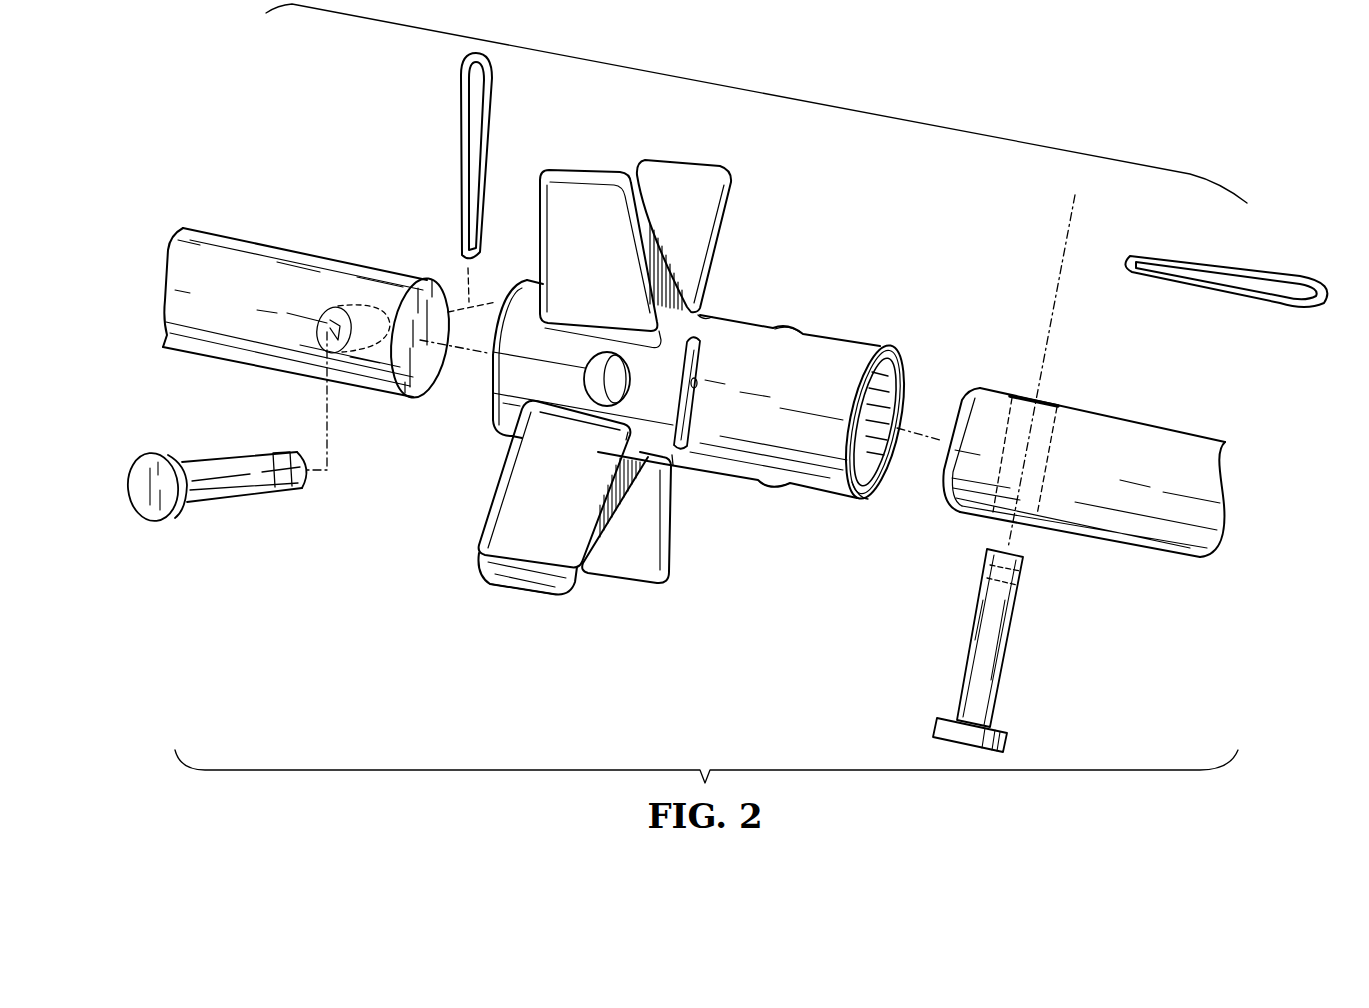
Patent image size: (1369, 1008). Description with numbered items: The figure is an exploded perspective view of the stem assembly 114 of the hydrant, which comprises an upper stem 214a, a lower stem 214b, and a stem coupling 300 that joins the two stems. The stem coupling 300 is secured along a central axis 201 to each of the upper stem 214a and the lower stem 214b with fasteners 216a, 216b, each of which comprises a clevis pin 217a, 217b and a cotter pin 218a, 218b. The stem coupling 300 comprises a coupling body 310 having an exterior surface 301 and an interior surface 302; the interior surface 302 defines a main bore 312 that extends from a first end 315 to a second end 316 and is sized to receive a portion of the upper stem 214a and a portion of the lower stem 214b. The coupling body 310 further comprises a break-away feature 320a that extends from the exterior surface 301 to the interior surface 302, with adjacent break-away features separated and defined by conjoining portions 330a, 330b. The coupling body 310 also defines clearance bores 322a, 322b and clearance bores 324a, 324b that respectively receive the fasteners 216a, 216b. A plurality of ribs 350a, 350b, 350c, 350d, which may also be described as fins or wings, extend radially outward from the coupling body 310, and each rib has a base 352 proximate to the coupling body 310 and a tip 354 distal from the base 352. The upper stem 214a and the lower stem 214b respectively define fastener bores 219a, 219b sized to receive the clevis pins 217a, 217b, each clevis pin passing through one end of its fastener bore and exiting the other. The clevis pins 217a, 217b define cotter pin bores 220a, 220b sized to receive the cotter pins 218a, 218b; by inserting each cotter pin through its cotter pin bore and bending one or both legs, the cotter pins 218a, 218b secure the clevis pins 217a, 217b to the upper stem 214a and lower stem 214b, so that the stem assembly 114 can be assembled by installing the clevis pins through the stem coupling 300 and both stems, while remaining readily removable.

The stem assembly 114 is at (762, 98).
The central axis 201 is at (932, 436).
The upper stem 214a is at (1138, 593).
The lower stem 214b is at (264, 216).
The fastener 216a is at (1025, 686).
The fastener 216b is at (224, 430).
The clevis pin 217a is at (973, 673).
The clevis pin 217b is at (210, 490).
The cotter pin 218a is at (1255, 276).
The cotter pin 218b is at (462, 107).
The fastener bore 219a is at (1060, 403).
The fastener bore 219b is at (333, 325).
The cotter pin bore 220a is at (1000, 570).
The cotter pin bore 220b is at (288, 452).
The stem coupling 300 is at (813, 243).
The exterior surface 301 is at (703, 455).
The interior surface 302 is at (883, 443).
The coupling body 310 is at (735, 476).
The main bore 312 is at (900, 400).
The first end 315 is at (866, 492).
The second end 316 is at (487, 370).
The break-away feature 320a is at (696, 385).
The clearance bore 322a is at (797, 329).
The clearance bore 322b is at (772, 486).
The clearance bore 324a is at (592, 350).
The clearance bore 324b is at (698, 382).
The conjoining portion 330a is at (677, 455).
The conjoining portion 330b is at (702, 320).
The rib 350a is at (508, 537).
The rib 350b is at (578, 207).
The rib 350c is at (683, 190).
The rib 350d is at (628, 565).
The base 352 is at (567, 427).
The tip 354 is at (522, 582).